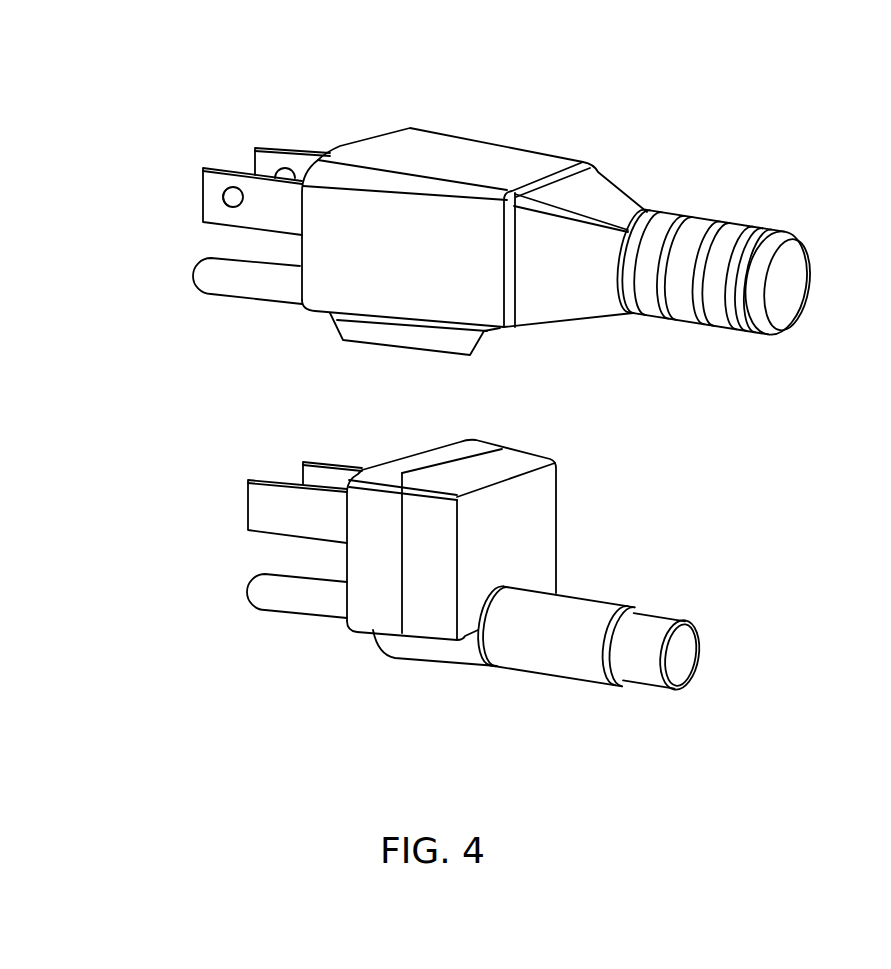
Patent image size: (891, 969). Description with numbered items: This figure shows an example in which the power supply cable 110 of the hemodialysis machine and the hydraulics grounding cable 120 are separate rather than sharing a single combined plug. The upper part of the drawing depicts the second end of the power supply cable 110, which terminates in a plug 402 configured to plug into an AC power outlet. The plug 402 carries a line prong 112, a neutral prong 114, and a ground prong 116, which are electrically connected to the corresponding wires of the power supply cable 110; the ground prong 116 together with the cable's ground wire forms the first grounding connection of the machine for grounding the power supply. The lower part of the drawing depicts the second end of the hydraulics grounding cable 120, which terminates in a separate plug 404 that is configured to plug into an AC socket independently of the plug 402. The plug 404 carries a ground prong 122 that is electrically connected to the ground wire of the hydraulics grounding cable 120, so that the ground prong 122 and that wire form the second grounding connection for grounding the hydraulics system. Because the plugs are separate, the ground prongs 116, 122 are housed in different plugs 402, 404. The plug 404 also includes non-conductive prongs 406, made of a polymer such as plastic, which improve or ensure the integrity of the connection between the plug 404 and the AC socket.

The plug 402 is at (360, 52).
The line prong 112 is at (269, 147).
The neutral prong 114 is at (203, 190).
The ground prong 116 is at (201, 279).
The power supply cable 110 is at (785, 229).
The plug 404 is at (388, 682).
The non-conductive prongs 406 is at (247, 505).
The ground prong 122 is at (248, 591).
The hydraulics grounding cable 120 is at (585, 677).